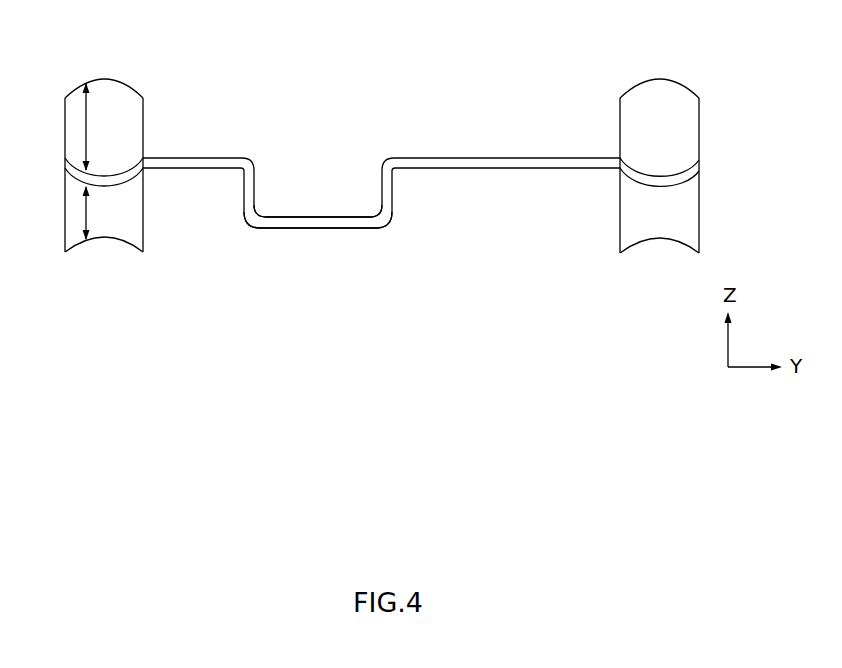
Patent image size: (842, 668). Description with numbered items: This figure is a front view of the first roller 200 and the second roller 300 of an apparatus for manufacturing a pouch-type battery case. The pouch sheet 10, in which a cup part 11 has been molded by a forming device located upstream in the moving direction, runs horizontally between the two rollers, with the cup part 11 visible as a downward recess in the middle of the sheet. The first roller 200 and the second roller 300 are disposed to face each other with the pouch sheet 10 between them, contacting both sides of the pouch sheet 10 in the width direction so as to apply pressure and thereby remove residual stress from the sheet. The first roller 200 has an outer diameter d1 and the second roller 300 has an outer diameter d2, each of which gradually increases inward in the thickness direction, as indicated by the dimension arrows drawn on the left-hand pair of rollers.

The pouch sheet 10 is at (457, 153).
The cup part 11 is at (309, 217).
The first roller 200 is at (112, 92).
The second roller 300 is at (115, 229).
The outer diameter of first roller d1 is at (85, 127).
The outer diameter of second roller d2 is at (85, 213).